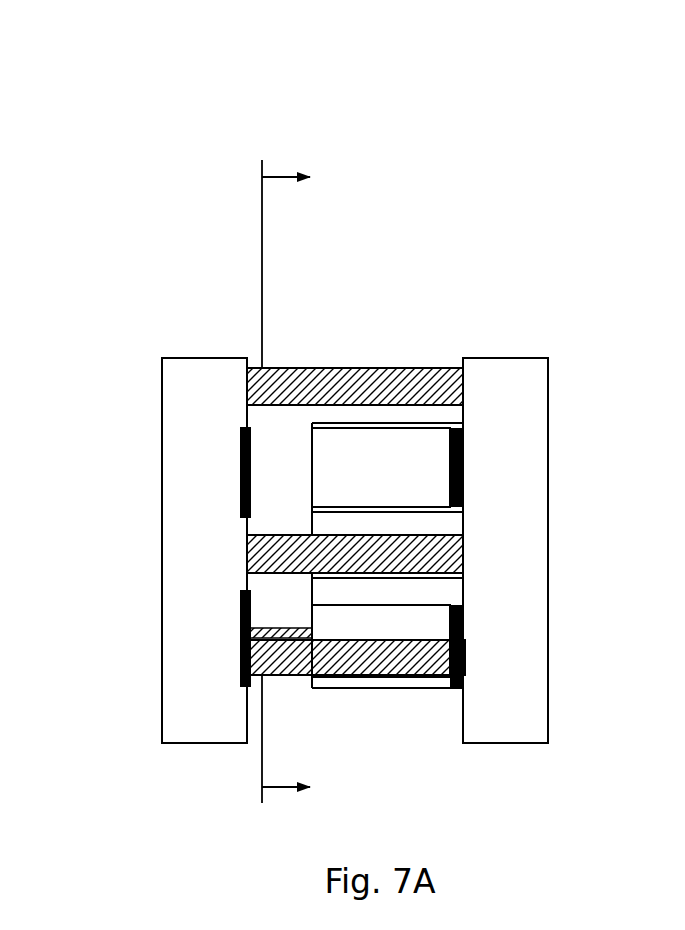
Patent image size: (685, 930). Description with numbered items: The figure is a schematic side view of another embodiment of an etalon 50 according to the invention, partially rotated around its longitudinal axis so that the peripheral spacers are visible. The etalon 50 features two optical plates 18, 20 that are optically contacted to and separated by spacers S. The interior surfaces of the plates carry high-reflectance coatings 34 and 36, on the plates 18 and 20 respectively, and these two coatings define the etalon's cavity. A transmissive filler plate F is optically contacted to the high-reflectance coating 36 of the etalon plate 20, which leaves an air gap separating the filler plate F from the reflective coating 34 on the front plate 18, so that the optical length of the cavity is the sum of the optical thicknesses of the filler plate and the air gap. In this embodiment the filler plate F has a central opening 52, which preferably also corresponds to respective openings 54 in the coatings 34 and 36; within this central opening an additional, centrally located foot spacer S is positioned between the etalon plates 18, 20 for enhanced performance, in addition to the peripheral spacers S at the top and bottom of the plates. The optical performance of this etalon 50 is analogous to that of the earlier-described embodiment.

The etalon 50 is at (487, 165).
The optical plate 18 is at (222, 378).
The optical plate 20 is at (535, 372).
The high-reflectance coating 34 is at (243, 432).
The high-reflectance coating 36 is at (465, 488).
The openings 54 is at (247, 582).
The central opening 52 is at (327, 588).
The spacer S is at (306, 385).
The transmissive filler plate F is at (437, 455).